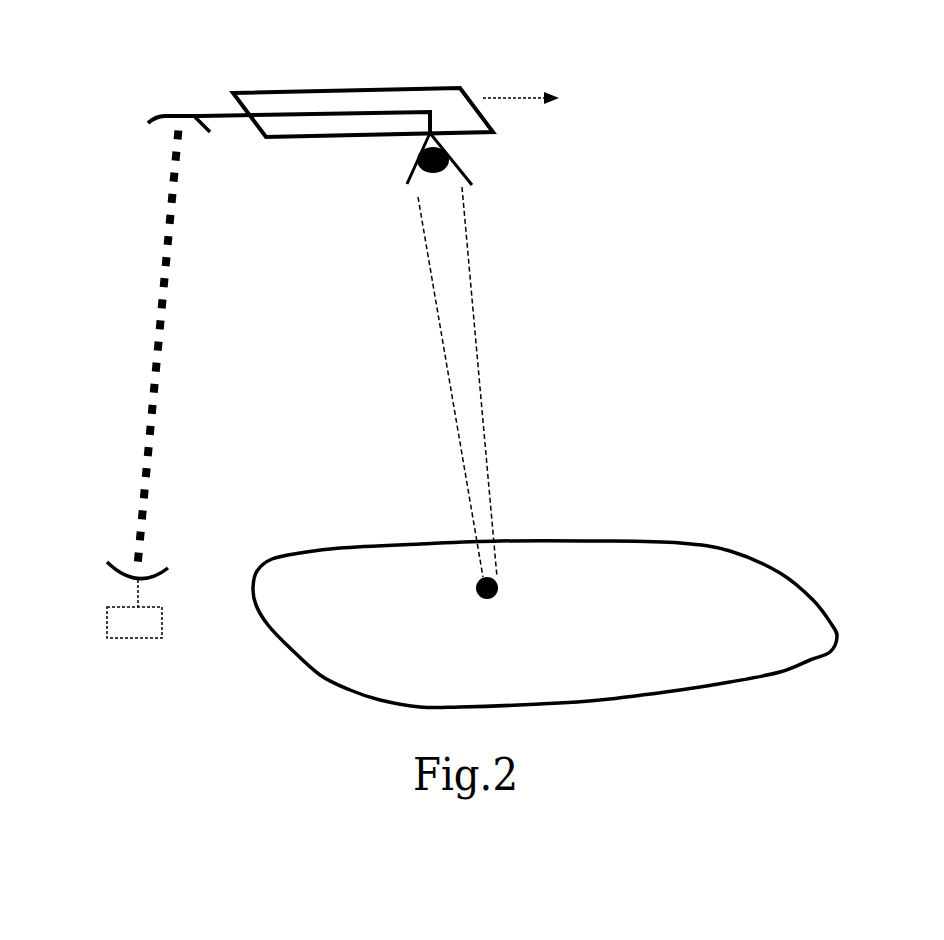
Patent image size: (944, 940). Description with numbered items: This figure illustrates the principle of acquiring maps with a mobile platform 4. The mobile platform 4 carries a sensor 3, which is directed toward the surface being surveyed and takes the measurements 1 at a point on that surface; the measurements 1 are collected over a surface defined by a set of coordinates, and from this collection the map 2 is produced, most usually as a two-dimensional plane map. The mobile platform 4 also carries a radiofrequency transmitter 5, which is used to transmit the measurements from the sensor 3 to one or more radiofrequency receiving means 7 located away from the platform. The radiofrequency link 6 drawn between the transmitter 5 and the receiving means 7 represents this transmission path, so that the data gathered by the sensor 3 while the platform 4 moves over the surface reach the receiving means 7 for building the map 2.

The measurements 1 is at (508, 577).
The map 2 is at (822, 650).
The sensor 3 is at (465, 160).
The mobile platform 4 is at (427, 88).
The radiofrequency transmitter 5 is at (155, 115).
The optical link 6 is at (148, 332).
The radiofrequency receiving means 7 is at (120, 582).